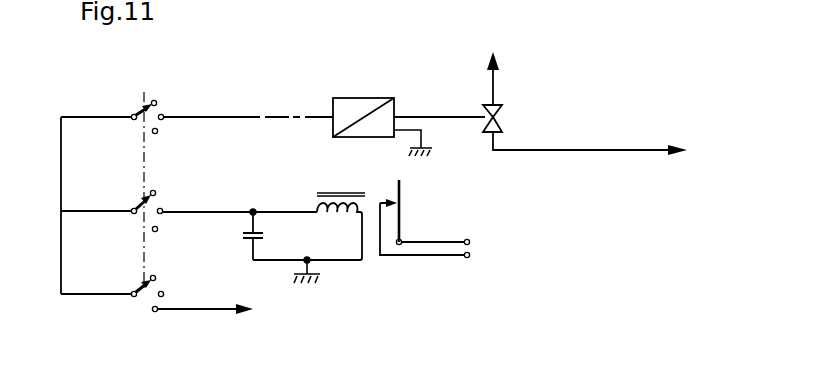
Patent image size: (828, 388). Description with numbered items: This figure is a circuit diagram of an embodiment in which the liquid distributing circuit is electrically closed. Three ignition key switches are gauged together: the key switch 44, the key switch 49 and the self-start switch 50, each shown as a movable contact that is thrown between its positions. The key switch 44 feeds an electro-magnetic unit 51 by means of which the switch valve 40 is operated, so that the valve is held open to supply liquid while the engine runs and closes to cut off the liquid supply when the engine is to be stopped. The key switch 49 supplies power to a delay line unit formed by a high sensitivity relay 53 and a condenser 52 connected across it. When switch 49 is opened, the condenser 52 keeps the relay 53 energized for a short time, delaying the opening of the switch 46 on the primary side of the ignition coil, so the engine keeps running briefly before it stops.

The switch valve 40 is at (503, 111).
The key switch 44 is at (134, 115).
The switch 46 is at (402, 203).
The key switch 49 is at (133, 206).
The self-start switch 50 is at (135, 288).
The electro-magnetic unit 51 is at (352, 106).
The condenser 52 is at (243, 232).
The high sensitivity relay 53 is at (317, 205).